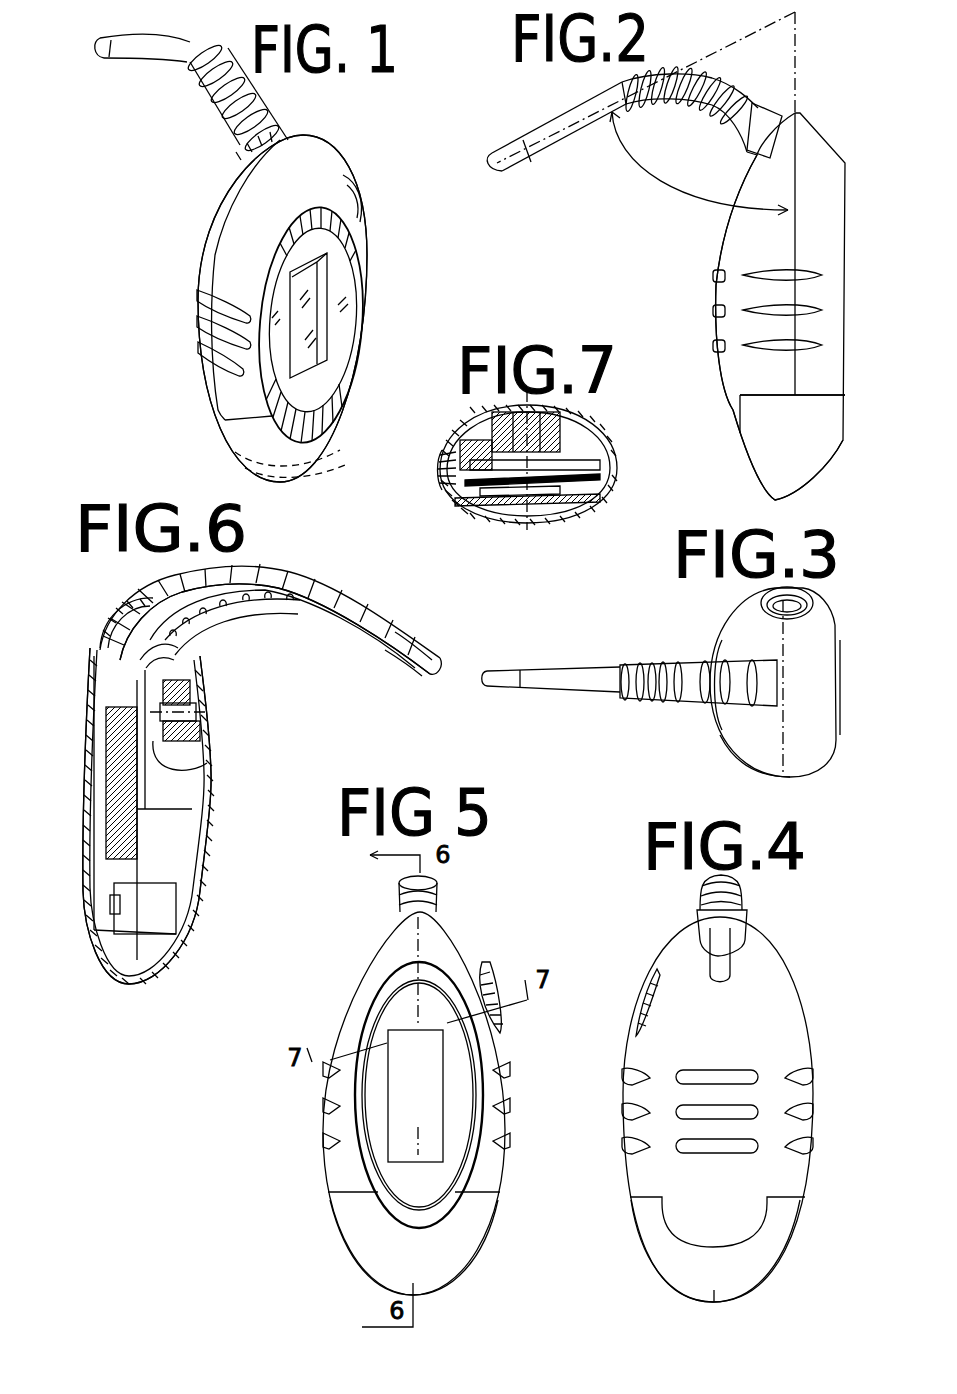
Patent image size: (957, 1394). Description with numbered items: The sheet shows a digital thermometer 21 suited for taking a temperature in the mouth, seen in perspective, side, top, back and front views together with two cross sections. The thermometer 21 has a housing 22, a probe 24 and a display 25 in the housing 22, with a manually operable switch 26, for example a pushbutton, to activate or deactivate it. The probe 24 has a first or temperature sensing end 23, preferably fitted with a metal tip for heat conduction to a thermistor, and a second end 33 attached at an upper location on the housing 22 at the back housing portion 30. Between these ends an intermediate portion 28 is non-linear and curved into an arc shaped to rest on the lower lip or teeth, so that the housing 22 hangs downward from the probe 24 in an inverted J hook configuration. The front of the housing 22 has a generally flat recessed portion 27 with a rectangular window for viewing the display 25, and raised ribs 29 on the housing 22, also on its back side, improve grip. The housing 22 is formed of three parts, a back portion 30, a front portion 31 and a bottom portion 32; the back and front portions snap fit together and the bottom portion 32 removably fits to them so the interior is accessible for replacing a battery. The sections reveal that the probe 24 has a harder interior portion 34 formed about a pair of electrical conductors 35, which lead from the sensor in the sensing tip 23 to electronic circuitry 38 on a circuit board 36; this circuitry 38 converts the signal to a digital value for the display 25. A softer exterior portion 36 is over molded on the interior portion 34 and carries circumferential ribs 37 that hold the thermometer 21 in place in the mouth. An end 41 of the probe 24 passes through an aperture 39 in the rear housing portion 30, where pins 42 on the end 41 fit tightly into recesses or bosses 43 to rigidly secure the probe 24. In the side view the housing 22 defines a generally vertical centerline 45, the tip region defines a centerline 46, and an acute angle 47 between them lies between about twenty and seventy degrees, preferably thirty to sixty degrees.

In FIG. 1, the digital thermometer 21 is at (168, 258).
In FIG. 6, the digital thermometer 21 is at (70, 879).
In FIG. 1, the housing 22 is at (233, 194).
In FIG. 2, the housing 22 is at (820, 216).
In FIG. 1, the temperature sensing tip 23 is at (101, 62).
In FIG. 2, the temperature sensing tip 23 is at (522, 168).
In FIG. 3, the temperature sensing tip 23 is at (505, 672).
In FIG. 6, the temperature sensing tip 23 is at (437, 652).
In FIG. 4, the temperature sensing tip 23 is at (726, 975).
In FIG. 1, the probe 24 is at (190, 75).
In FIG. 2, the probe 24 is at (763, 100).
In FIG. 3, the probe 24 is at (672, 665).
In FIG. 6, the probe 24 is at (277, 566).
In FIG. 5, the probe 24 is at (423, 902).
In FIG. 4, the probe 24 is at (724, 904).
In FIG. 1, the display 25 is at (312, 300).
In FIG. 7, the display 25 is at (600, 500).
In FIG. 6, the display 25 is at (106, 785).
In FIG. 5, the display 25 is at (423, 1067).
In FIG. 1, the switch 26 is at (352, 192).
In FIG. 7, the switch 26 is at (445, 480).
In FIG. 3, the switch 26 is at (813, 605).
In FIG. 5, the switch 26 is at (491, 997).
In FIG. 4, the switch 26 is at (640, 987).
In FIG. 1, the recessed portion 27 is at (317, 381).
In FIG. 2, the intermediate portion 28 is at (698, 120).
In FIG. 6, the intermediate portion 28 is at (260, 612).
In FIG. 1, the raised ribs 29 is at (205, 370).
In FIG. 2, the raised ribs 29 is at (812, 346).
In FIG. 3, the raised ribs 29 is at (795, 770).
In FIG. 5, the raised ribs 29 is at (323, 1138).
In FIG. 4, the raised ribs 29 is at (808, 1081).
In FIG. 2, the back housing portion 30 is at (735, 222).
In FIG. 6, the back housing portion 30 is at (207, 738).
In FIG. 4, the back housing portion 30 is at (777, 1044).
In FIG. 1, the front housing portion 31 is at (285, 446).
In FIG. 2, the front housing portion 31 is at (828, 293).
In FIG. 7, the front housing portion 31 is at (590, 430).
In FIG. 3, the front housing portion 31 is at (745, 725).
In FIG. 5, the front housing portion 31 is at (497, 1170).
In FIG. 4, the front housing portion 31 is at (717, 1111).
In FIG. 2, the bottom housing portion 32 is at (816, 451).
In FIG. 7, the bottom housing portion 32 is at (596, 510).
In FIG. 3, the bottom housing portion 32 is at (815, 722).
In FIG. 5, the bottom housing portion 32 is at (462, 1247).
In FIG. 4, the bottom housing portion 32 is at (760, 1255).
In FIG. 2, the second end 33 is at (783, 108).
In FIG. 6, the interior portion 34 is at (176, 588).
In FIG. 6, the electrical conductors 35 is at (107, 645).
In FIG. 7, the exterior portion 36 is at (603, 462).
In FIG. 6, the exterior portion 36 is at (90, 690).
In FIG. 2, the ribs 37 is at (760, 96).
In FIG. 3, the ribs 37 is at (680, 700).
In FIG. 6, the ribs 37 is at (310, 572).
In FIG. 6, the electronic circuitry 38 is at (110, 905).
In FIG. 6, the aperture 39 is at (183, 644).
In FIG. 6, the end 41 is at (207, 765).
In FIG. 6, the pins 42 is at (206, 720).
In FIG. 6, the recesses or bosses 43 is at (193, 689).
In FIG. 2, the vertical axis or centerline 45 is at (800, 47).
In FIG. 2, the centerline 46 is at (495, 171).
In FIG. 2, the acute angle 47 is at (699, 163).